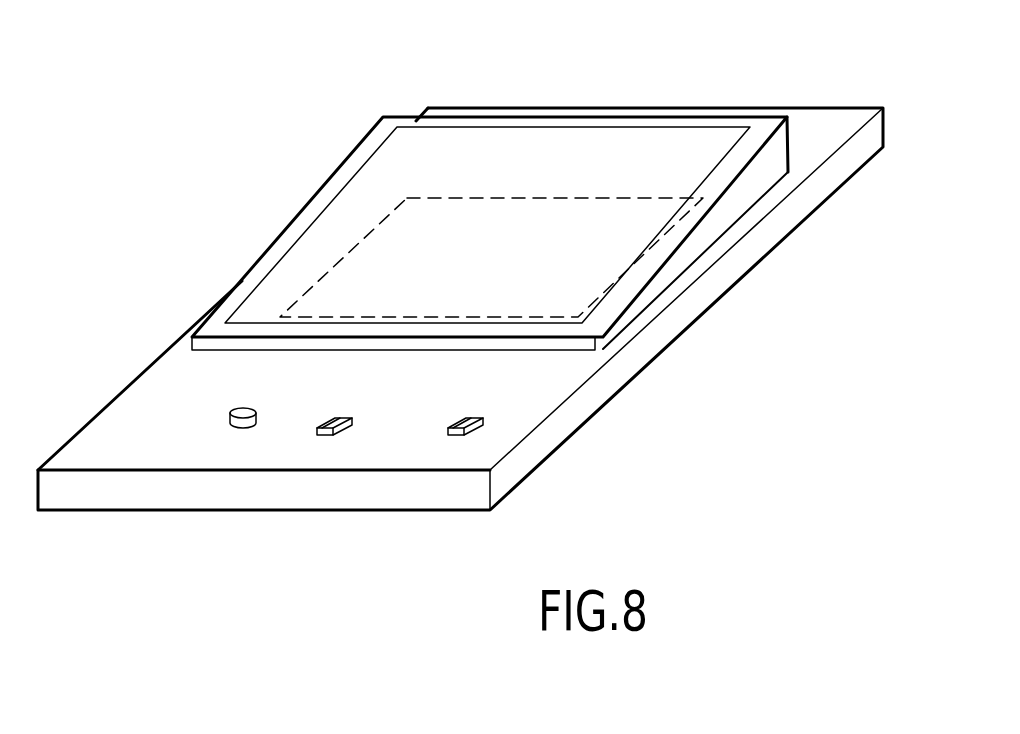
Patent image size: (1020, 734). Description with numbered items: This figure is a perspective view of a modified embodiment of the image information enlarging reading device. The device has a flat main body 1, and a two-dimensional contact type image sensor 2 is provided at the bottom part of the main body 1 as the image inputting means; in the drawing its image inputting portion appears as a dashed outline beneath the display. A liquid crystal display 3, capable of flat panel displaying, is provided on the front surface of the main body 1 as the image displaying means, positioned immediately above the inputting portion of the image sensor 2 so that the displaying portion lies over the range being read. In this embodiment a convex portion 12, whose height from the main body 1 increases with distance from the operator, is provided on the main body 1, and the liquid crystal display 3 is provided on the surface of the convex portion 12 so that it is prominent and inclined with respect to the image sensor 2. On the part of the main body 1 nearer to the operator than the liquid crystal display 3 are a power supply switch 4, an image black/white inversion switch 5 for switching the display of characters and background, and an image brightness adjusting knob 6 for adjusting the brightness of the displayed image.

The main body 1 is at (805, 118).
The two-dimensional contact type image sensor 2 is at (352, 262).
The liquid crystal display 3 is at (556, 132).
The power supply switch 4 is at (480, 418).
The image black/white inversion switch 5 is at (348, 418).
The image brightness adjusting knob 6 is at (240, 407).
The convex portion 12 is at (765, 182).